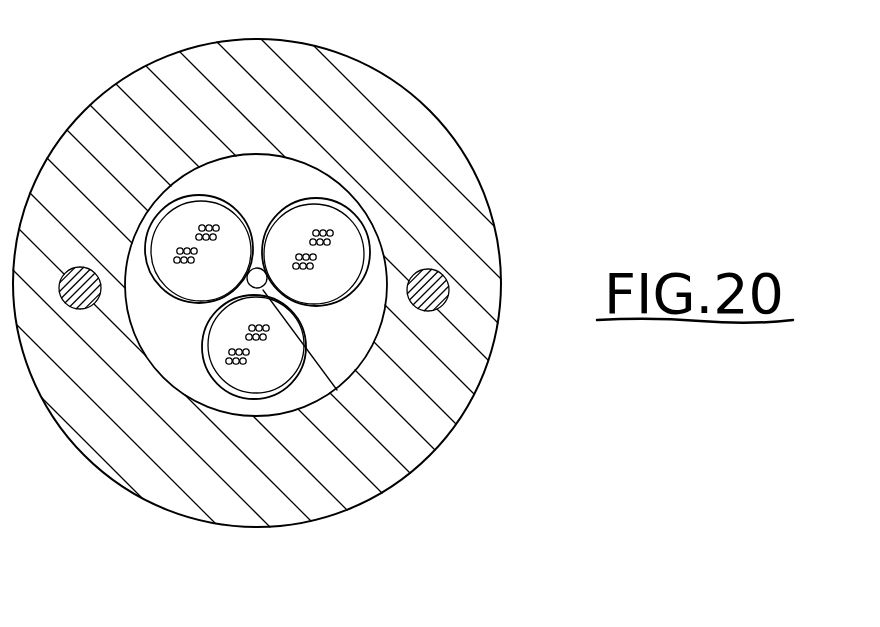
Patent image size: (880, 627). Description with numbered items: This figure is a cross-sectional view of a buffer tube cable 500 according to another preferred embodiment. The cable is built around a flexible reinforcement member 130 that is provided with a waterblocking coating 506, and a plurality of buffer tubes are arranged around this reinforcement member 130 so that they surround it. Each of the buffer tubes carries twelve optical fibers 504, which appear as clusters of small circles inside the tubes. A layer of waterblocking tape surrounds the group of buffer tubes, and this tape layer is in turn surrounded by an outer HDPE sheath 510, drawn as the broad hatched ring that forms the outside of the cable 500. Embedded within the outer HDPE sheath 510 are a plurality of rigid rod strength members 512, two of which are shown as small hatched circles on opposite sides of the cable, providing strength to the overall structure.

The buffer tube cable 500 is at (576, 176).
The optical fibers 504 is at (245, 353).
The waterblocking coating 506 is at (258, 268).
The outer HDPE sheath 510 is at (348, 496).
The rigid rod strength members 512 is at (441, 298).
The flexible reinforcement member 130 is at (427, 457).